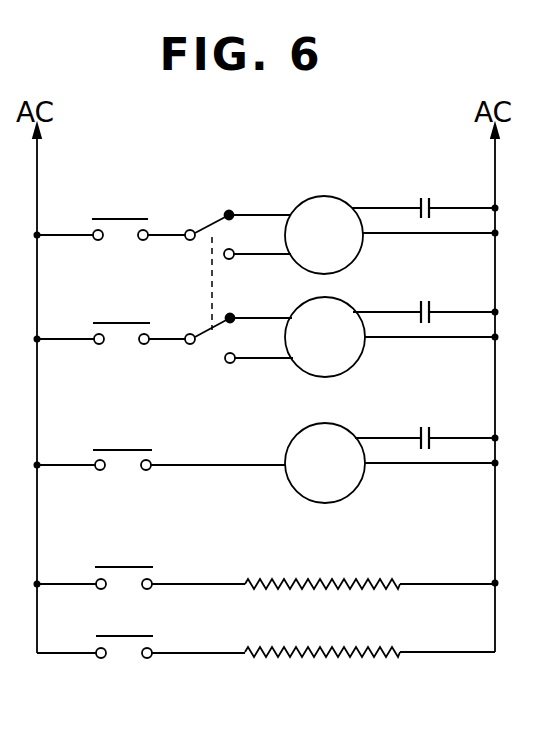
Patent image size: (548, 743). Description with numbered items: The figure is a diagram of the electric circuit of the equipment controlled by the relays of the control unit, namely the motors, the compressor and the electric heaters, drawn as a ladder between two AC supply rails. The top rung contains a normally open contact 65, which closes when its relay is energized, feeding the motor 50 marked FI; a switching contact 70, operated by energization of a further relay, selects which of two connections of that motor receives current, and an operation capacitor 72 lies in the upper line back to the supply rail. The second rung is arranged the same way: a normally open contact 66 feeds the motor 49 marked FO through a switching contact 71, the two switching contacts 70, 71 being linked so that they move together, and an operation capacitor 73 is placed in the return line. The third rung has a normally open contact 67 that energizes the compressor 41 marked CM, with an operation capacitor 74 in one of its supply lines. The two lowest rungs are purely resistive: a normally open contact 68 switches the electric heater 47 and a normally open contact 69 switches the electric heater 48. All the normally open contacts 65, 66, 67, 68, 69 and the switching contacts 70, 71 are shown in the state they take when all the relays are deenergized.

The compressor 41 is at (358, 488).
The electric heater 47 is at (370, 588).
The electric heater 48 is at (370, 657).
The motor 49 is at (348, 306).
The motor 50 is at (322, 196).
The normally open contact 65 is at (118, 217).
The normally open contact 66 is at (122, 322).
The normally open contact 67 is at (125, 448).
The normally open contact 68 is at (126, 565).
The normally open contact 69 is at (128, 635).
The switching contact 70 is at (211, 228).
The switching contact 71 is at (205, 345).
The operation capacitor 72 is at (425, 197).
The operation capacitor 73 is at (428, 300).
The operation capacitor 74 is at (425, 425).